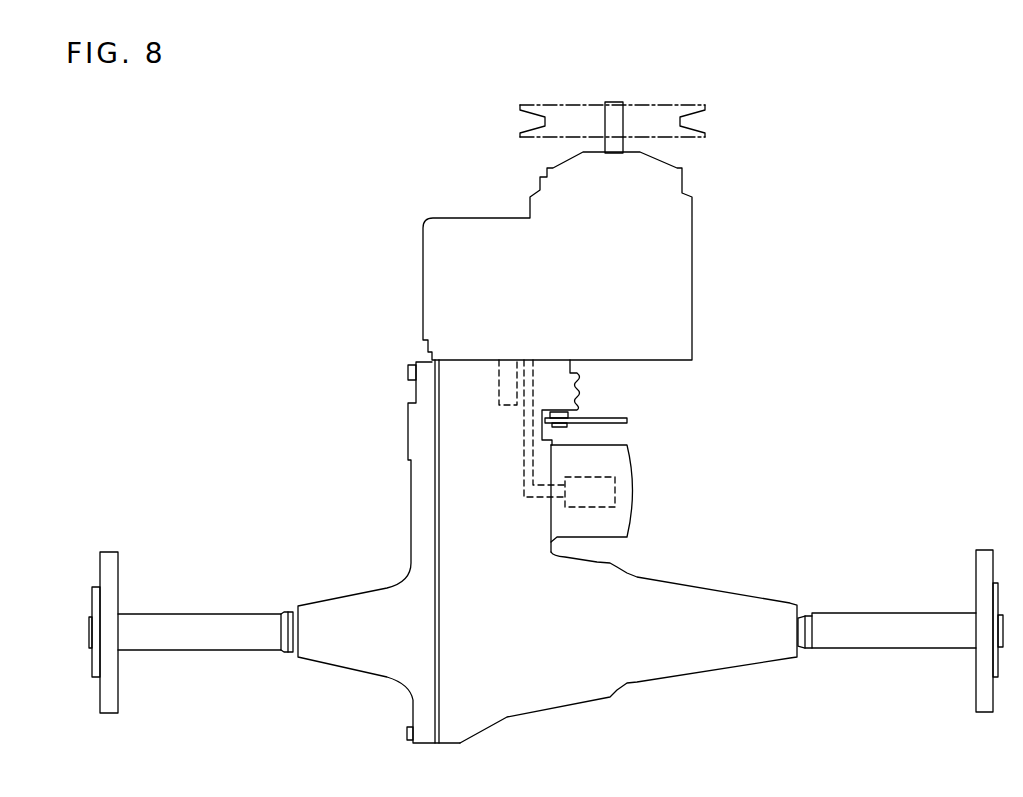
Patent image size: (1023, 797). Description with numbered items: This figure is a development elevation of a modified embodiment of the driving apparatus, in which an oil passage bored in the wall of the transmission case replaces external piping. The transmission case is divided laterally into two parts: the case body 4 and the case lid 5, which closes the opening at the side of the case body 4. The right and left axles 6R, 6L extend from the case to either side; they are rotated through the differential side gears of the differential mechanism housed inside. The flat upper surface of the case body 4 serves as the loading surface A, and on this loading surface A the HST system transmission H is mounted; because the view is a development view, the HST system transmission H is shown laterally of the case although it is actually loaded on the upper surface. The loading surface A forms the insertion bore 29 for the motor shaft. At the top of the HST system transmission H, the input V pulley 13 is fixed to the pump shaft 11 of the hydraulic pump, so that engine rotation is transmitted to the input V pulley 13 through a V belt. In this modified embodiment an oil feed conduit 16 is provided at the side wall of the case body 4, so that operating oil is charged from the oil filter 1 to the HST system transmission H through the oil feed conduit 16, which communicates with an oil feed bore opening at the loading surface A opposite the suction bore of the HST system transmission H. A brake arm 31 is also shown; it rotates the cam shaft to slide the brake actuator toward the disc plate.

The oil filter 1 is at (637, 477).
The case body 4 is at (553, 658).
The case lid 5 is at (412, 537).
The right axle 6R is at (237, 617).
The left axle 6L is at (941, 618).
The pump shaft 11 is at (611, 100).
The input V pulley 13 is at (690, 107).
The oil feed conduit 16 is at (523, 465).
The insertion bore 29 is at (499, 389).
The brake arm 31 is at (603, 416).
The loading surface A is at (462, 357).
The HST system transmission H is at (590, 278).